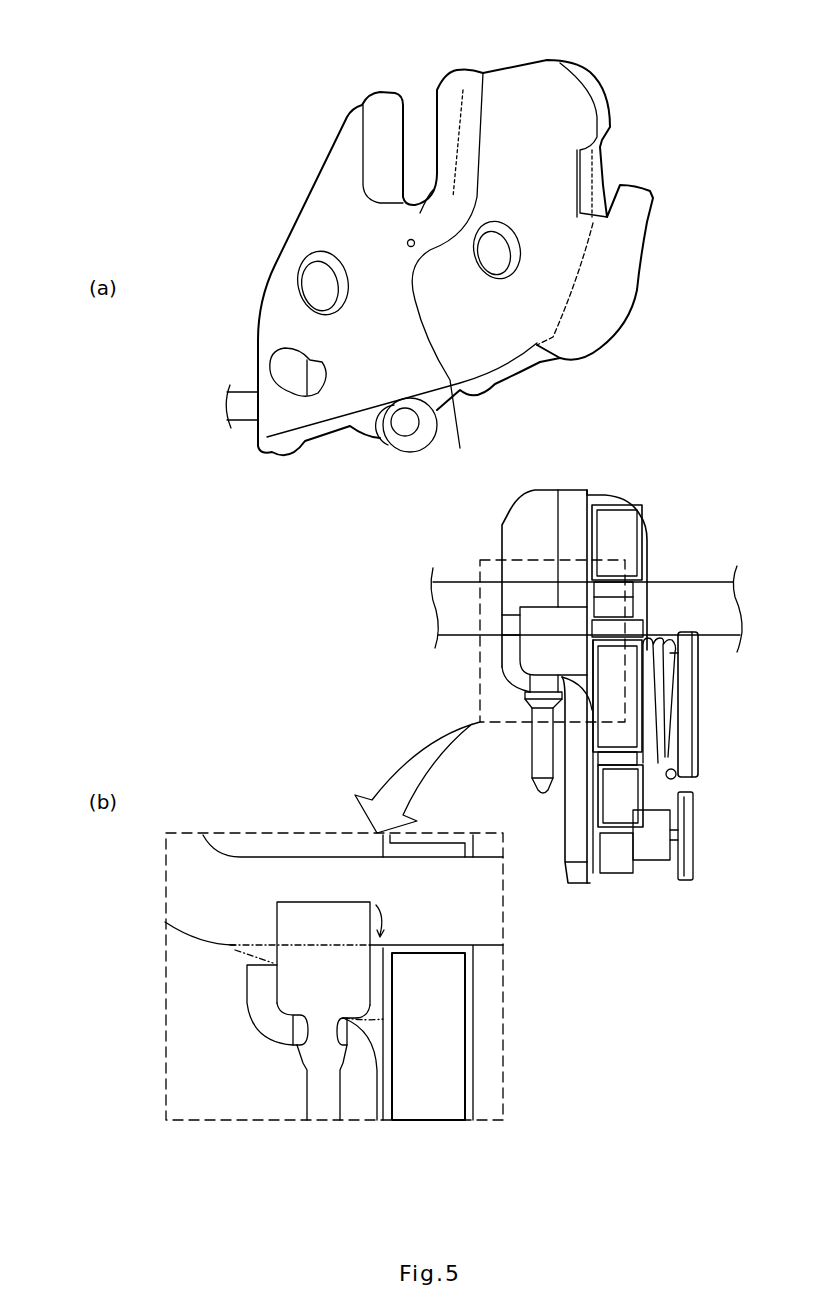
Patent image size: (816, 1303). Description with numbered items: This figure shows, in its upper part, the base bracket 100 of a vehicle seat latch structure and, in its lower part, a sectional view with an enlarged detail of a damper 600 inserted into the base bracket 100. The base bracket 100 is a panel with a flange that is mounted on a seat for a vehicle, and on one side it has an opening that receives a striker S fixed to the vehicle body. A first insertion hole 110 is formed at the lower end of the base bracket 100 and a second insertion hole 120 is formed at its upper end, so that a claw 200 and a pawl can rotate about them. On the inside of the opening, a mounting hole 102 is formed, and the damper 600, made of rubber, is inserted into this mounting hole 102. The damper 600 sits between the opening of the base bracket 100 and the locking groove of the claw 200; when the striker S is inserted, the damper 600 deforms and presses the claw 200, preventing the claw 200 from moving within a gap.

The base bracket 100 is at (326, 109).
The mounting hole 102 is at (425, 125).
The first insertion hole 110 is at (503, 256).
The second insertion hole 120 is at (323, 280).
The claw 200 is at (445, 1041).
The damper 600 is at (543, 757).
The striker S is at (461, 592).